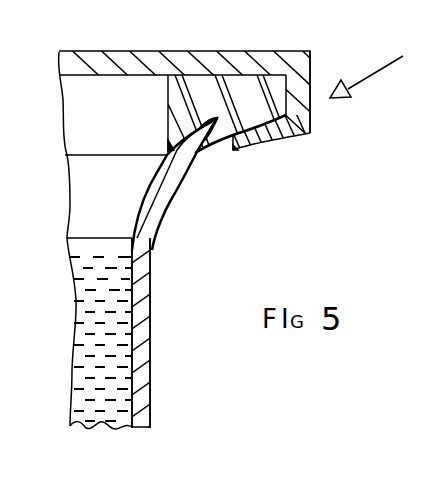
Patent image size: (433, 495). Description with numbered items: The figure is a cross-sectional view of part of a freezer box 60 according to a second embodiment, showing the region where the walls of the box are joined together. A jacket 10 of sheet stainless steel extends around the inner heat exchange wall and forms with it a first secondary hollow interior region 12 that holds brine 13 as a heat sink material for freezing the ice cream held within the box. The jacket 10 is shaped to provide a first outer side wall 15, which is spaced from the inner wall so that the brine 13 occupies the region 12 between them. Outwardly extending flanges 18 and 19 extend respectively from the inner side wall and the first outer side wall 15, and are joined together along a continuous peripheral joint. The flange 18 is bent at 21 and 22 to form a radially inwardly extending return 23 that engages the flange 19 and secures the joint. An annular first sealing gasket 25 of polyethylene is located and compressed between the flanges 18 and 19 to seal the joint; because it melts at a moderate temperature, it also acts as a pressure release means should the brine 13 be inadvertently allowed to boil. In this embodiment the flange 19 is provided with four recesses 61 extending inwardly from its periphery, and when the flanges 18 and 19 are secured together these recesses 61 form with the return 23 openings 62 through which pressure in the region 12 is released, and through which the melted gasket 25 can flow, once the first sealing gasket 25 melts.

The jacket 10 is at (150, 355).
The first secondary hollow interior region 12 is at (118, 228).
The brine 13 is at (88, 237).
The first outer side wall 15 is at (150, 293).
The flange 18 is at (262, 64).
The flange 19 is at (215, 125).
The bend 21 is at (310, 50).
The bend 22 is at (310, 133).
The radially inwardly extending return 23 is at (278, 123).
The first sealing gasket 25 is at (205, 90).
The freezer box 60 is at (366, 70).
The recesses 61 is at (218, 125).
The openings 62 is at (223, 132).